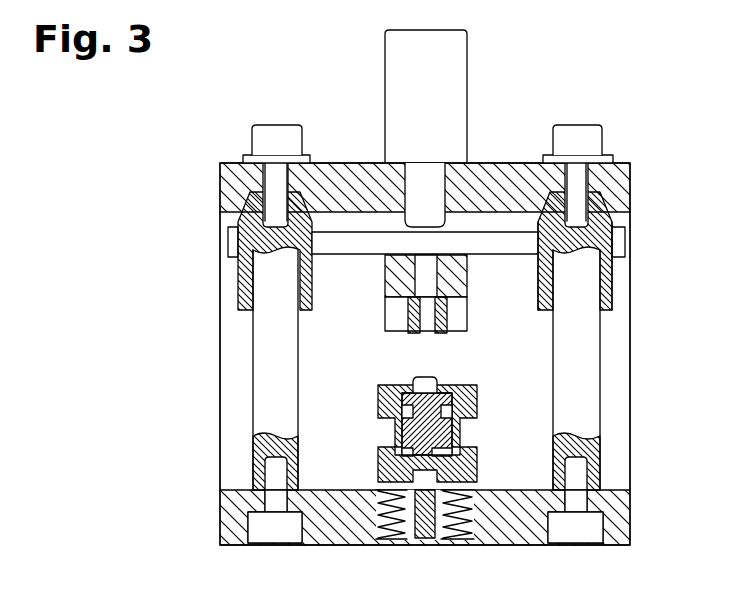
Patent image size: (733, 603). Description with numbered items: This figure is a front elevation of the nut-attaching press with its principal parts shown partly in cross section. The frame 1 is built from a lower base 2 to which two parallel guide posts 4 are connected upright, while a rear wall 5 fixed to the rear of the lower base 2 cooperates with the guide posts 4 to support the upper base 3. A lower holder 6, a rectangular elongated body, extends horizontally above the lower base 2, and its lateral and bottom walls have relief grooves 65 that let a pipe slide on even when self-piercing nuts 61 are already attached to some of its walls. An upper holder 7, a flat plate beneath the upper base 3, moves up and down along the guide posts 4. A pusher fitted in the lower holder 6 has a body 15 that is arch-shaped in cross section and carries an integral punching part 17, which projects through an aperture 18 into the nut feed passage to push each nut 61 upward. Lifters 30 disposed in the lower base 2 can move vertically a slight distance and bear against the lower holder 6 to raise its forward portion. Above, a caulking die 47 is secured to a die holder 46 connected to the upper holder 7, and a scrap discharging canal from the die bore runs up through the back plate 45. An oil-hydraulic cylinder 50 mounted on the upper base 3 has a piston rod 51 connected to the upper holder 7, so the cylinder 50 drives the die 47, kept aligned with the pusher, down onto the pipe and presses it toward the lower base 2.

The frame 1 is at (637, 216).
The lower base 2 is at (613, 503).
The upper base 3 is at (620, 174).
The guide posts 4 is at (268, 338).
The rear wall 5 is at (633, 282).
The lower holder 6 is at (378, 463).
The upper holder 7 is at (350, 240).
The pusher body 15 is at (463, 422).
The punching part 17 is at (510, 405).
The aperture 18 is at (395, 385).
The lifters 30 is at (371, 508).
The back plate 45 is at (466, 270).
The die holder 46 is at (457, 312).
The caulking die 47 is at (388, 318).
The oil-hydraulic cylinder 50 is at (456, 76).
The piston rod 51 is at (446, 177).
The self-piercing nuts 61 is at (432, 380).
The relief grooves 65 is at (392, 430).